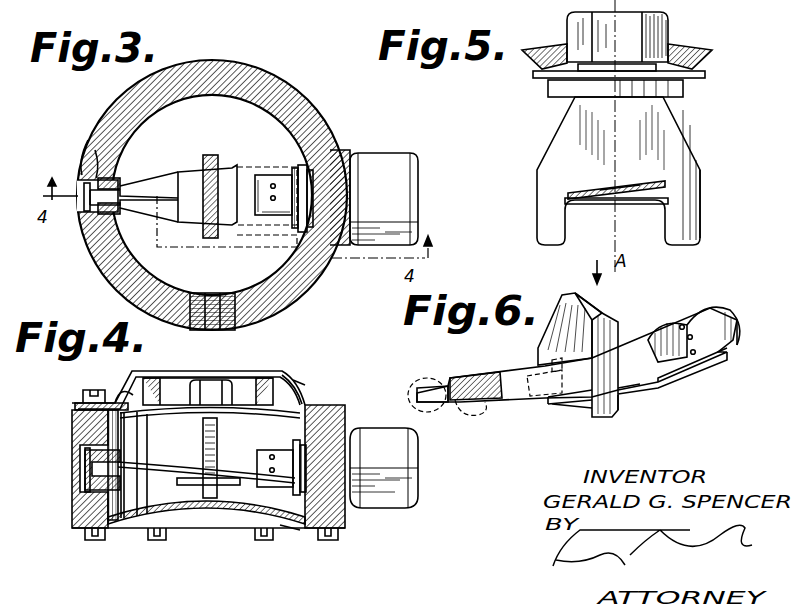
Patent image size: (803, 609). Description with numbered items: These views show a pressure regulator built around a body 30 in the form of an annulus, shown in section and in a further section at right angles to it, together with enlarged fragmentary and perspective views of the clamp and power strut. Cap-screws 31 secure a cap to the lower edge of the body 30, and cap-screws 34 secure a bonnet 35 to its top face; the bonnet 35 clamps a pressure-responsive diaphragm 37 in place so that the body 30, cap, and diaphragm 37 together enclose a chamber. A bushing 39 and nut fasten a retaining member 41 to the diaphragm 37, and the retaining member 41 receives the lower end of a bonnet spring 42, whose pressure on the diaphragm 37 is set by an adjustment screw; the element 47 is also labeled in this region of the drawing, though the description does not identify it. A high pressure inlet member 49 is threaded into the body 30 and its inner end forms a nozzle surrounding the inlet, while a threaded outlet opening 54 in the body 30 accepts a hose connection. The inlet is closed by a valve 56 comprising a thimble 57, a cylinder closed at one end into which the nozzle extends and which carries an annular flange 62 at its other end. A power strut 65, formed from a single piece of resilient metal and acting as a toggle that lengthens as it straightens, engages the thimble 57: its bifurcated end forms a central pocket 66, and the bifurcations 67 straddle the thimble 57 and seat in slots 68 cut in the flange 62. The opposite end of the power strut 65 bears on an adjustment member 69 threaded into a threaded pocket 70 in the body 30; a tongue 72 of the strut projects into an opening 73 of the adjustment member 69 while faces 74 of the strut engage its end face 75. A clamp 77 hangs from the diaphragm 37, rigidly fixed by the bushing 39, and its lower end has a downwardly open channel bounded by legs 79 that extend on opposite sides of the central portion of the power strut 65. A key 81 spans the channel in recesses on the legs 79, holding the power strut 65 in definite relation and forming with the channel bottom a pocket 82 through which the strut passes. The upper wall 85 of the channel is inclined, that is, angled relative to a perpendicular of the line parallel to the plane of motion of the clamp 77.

In FIG. 3, the body 30 is at (322, 113).
In FIG. 4, the body 30 is at (78, 452).
In FIG. 4, the cap-screws 31 is at (85, 541).
In FIG. 4, the cap-screws 34 is at (80, 394).
In FIG. 4, the bonnet 35 is at (316, 398).
In FIG. 4, the diaphragm 37 is at (128, 396).
In FIG. 5, the bushing 39 is at (684, 92).
In FIG. 4, the retaining member 41 is at (168, 417).
In FIG. 5, the retaining member 41 is at (617, 37).
In FIG. 4, the bonnet spring 42 is at (288, 376).
In FIG. 4, the cover rim 47 is at (292, 376).
In FIG. 4, the high pressure inlet member 49 is at (416, 447).
In FIG. 3, the threaded outlet opening 54 is at (240, 325).
In FIG. 3, the valve 56 is at (264, 180).
In FIG. 6, the valve 56 is at (708, 312).
In FIG. 4, the thimble 57 is at (292, 528).
In FIG. 6, the annular flange 62 is at (748, 338).
In FIG. 3, the power strut 65 is at (237, 166).
In FIG. 4, the power strut 65 is at (234, 476).
In FIG. 6, the power strut 65 is at (627, 342).
In FIG. 3, the central pocket 66 is at (255, 208).
In FIG. 3, the bifurcations 67 is at (275, 176).
In FIG. 3, the slots 68 is at (296, 228).
In FIG. 3, the adjustment member 69 is at (120, 174).
In FIG. 6, the adjustment member 69 is at (432, 380).
In FIG. 3, the threaded pocket 70 is at (78, 173).
In FIG. 3, the tongue 72 is at (98, 148).
In FIG. 3, the opening 73 is at (100, 227).
In FIG. 3, the faces 74 is at (122, 183).
In FIG. 4, the faces 74 is at (102, 470).
In FIG. 3, the end face 75 is at (122, 220).
In FIG. 5, the clamp 77 is at (560, 133).
In FIG. 6, the clamp 77 is at (600, 312).
In FIG. 5, the legs 79 is at (701, 222).
In FIG. 6, the legs 79 is at (620, 405).
In FIG. 4, the key 81 is at (232, 487).
In FIG. 5, the key 81 is at (648, 206).
In FIG. 6, the key 81 is at (566, 408).
In FIG. 5, the pocket 82 is at (665, 190).
In FIG. 5, the upper wall 85 is at (626, 190).
In FIG. 6, the upper wall 85 is at (540, 364).